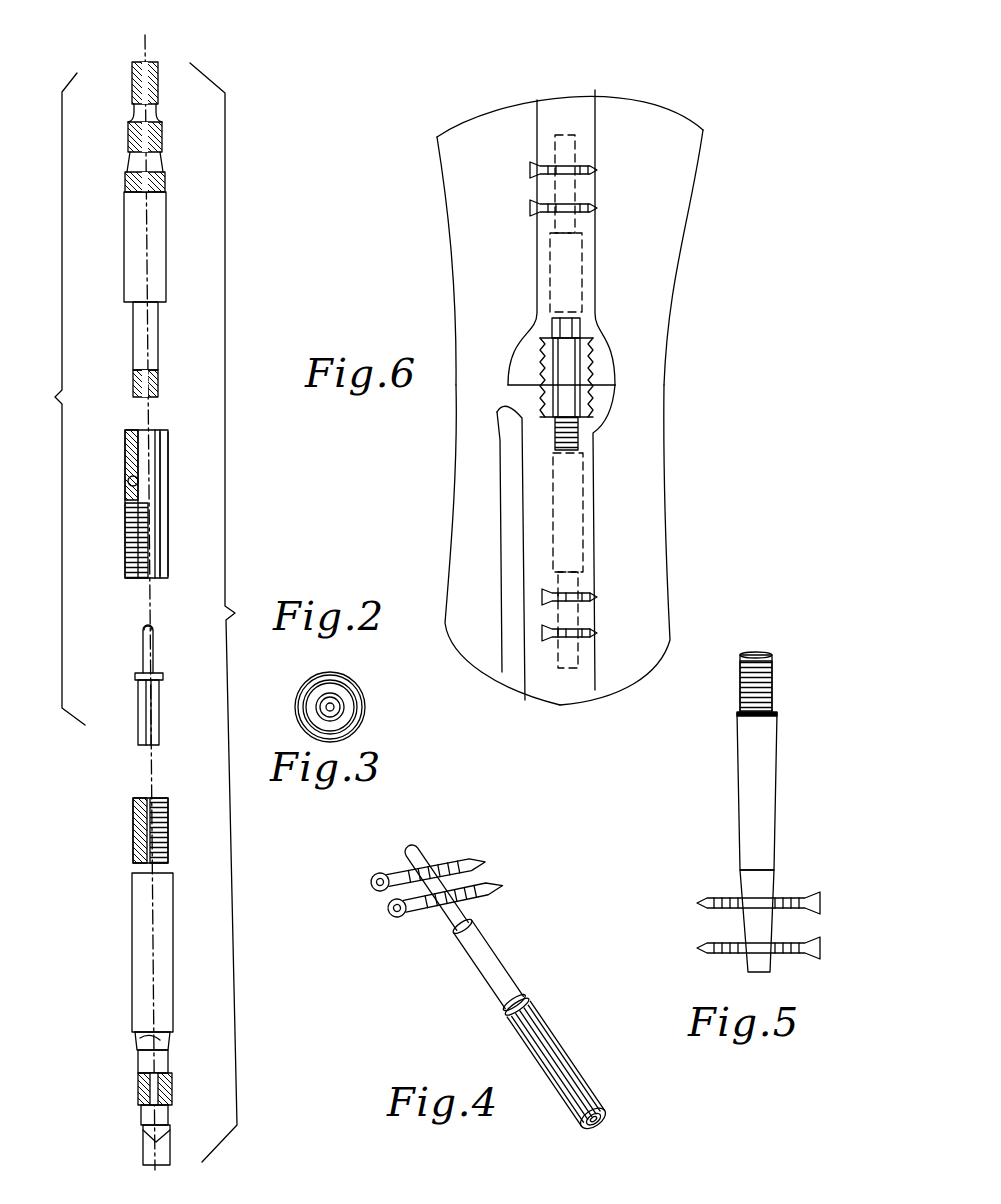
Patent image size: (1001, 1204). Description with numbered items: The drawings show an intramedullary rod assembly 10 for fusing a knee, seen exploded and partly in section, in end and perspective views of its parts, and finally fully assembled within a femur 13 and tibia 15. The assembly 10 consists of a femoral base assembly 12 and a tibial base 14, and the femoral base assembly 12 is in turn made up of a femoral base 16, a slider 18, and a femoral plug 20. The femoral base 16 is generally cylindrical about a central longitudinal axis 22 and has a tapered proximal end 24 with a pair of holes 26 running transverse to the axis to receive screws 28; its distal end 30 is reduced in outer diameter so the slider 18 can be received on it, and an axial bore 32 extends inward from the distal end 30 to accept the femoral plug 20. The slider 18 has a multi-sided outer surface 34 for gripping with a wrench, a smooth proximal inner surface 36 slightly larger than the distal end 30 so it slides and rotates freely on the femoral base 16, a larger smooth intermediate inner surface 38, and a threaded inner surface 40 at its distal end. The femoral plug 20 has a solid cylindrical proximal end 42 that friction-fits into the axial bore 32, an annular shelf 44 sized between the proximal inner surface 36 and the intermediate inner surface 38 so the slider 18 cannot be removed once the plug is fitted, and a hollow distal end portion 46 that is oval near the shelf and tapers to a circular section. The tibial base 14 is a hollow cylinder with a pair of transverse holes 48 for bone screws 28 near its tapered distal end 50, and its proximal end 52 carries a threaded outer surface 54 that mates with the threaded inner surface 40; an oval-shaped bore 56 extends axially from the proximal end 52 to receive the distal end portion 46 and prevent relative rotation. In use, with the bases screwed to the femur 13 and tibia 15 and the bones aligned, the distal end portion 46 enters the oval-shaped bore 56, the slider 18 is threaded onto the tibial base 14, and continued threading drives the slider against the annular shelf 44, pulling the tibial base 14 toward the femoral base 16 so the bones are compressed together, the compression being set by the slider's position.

In FIG. 2, the intramedullary rod assembly 10 is at (232, 223).
In FIG. 2, the femoral base assembly 12 is at (58, 200).
In FIG. 4, the femoral base assembly 12 is at (463, 894).
In FIG. 6, the femoral base assembly 12 is at (600, 240).
In FIG. 6, the femur 13 is at (585, 125).
In FIG. 2, the tibial base 14 is at (165, 955).
In FIG. 5, the tibial base 14 is at (748, 783).
In FIG. 6, the tibial base 14 is at (590, 514).
In FIG. 6, the tibia 15 is at (572, 690).
In FIG. 2, the femoral base 16 is at (160, 248).
In FIG. 4, the femoral base 16 is at (503, 972).
In FIG. 6, the femoral base 16 is at (605, 276).
In FIG. 2, the slider 18 is at (170, 498).
In FIG. 4, the slider 18 is at (589, 1067).
In FIG. 6, the slider 18 is at (595, 346).
In FIG. 2, the femoral plug 20 is at (156, 660).
In FIG. 2, the central longitudinal axis 22 is at (147, 40).
In FIG. 2, the tapered proximal end 24 is at (158, 63).
In FIG. 4, the tapered proximal end 24 is at (427, 851).
In FIG. 2, the holes 26 is at (155, 118).
In FIG. 4, the screws 28 is at (485, 860).
In FIG. 5, the screws 28 is at (795, 895).
In FIG. 6, the screws 28 is at (530, 170).
In FIG. 2, the distal end 30 is at (160, 397).
In FIG. 2, the axial bore 32 is at (135, 397).
In FIG. 2, the multi-sided outer surface 34 is at (165, 437).
In FIG. 3, the multi-sided outer surface 34 is at (352, 683).
In FIG. 6, the multi-sided outer surface 34 is at (582, 377).
In FIG. 2, the proximal inner surface 36 is at (140, 430).
In FIG. 2, the intermediate inner surface 38 is at (130, 482).
In FIG. 2, the threaded inner surface 40 is at (125, 535).
In FIG. 2, the solid cylindrical proximal end 42 is at (151, 628).
In FIG. 2, the annular shelf 44 is at (138, 678).
In FIG. 2, the hollow distal end portion 46 is at (159, 725).
In FIG. 3, the hollow distal end portion 46 is at (344, 712).
In FIG. 4, the hollow distal end portion 46 is at (593, 1119).
In FIG. 2, the transverse holes 48 is at (165, 1055).
In FIG. 2, the tapered distal end 50 is at (148, 1145).
In FIG. 5, the tapered distal end 50 is at (758, 976).
In FIG. 2, the proximal end 52 is at (160, 800).
In FIG. 5, the proximal end 52 is at (773, 660).
In FIG. 2, the threaded outer surface 54 is at (168, 830).
In FIG. 5, the threaded outer surface 54 is at (742, 680).
In FIG. 6, the threaded outer surface 54 is at (592, 437).
In FIG. 2, the oval-shaped bore 56 is at (135, 800).
In FIG. 5, the oval-shaped bore 56 is at (754, 655).